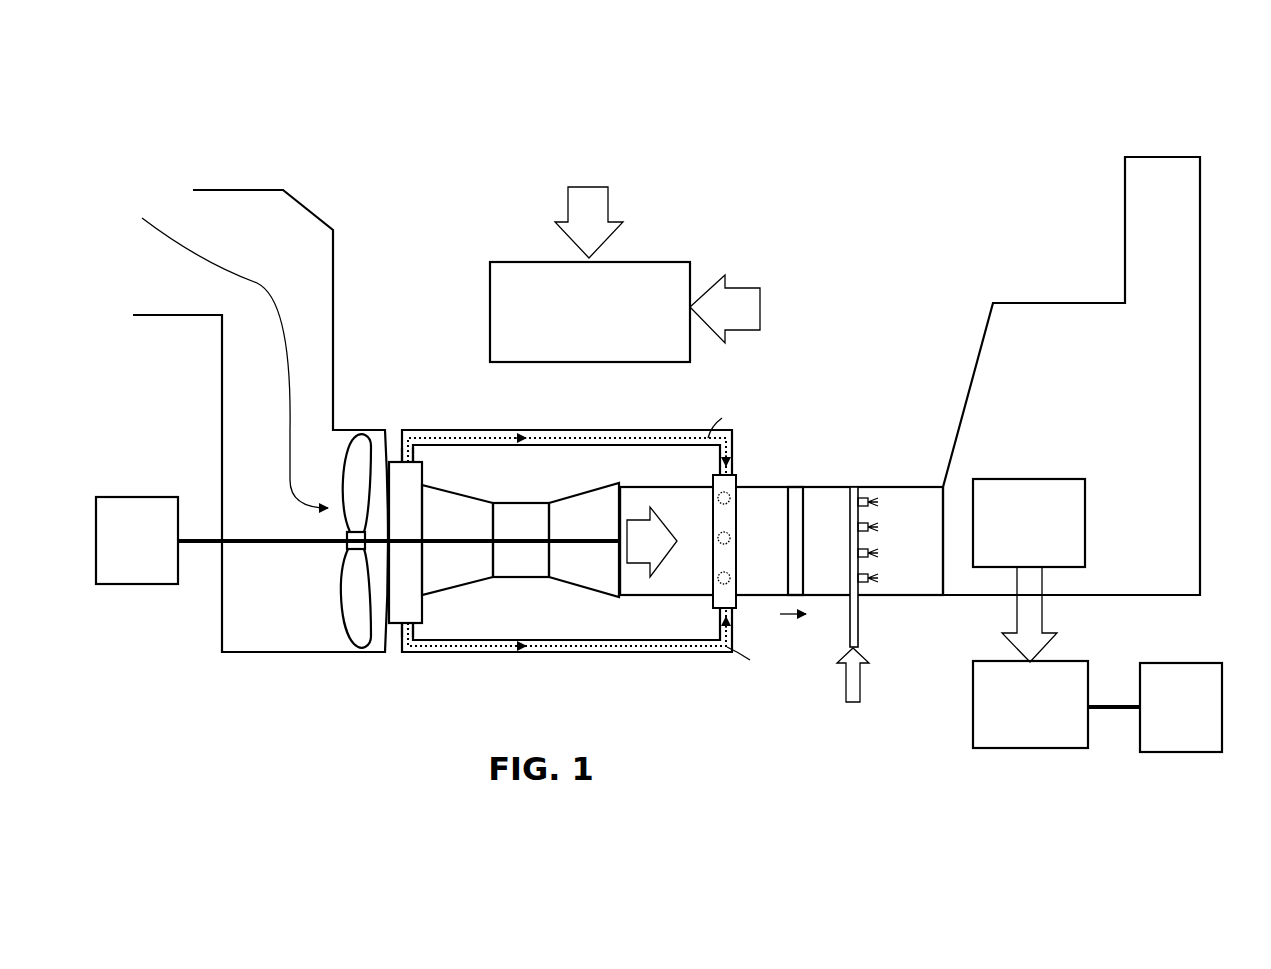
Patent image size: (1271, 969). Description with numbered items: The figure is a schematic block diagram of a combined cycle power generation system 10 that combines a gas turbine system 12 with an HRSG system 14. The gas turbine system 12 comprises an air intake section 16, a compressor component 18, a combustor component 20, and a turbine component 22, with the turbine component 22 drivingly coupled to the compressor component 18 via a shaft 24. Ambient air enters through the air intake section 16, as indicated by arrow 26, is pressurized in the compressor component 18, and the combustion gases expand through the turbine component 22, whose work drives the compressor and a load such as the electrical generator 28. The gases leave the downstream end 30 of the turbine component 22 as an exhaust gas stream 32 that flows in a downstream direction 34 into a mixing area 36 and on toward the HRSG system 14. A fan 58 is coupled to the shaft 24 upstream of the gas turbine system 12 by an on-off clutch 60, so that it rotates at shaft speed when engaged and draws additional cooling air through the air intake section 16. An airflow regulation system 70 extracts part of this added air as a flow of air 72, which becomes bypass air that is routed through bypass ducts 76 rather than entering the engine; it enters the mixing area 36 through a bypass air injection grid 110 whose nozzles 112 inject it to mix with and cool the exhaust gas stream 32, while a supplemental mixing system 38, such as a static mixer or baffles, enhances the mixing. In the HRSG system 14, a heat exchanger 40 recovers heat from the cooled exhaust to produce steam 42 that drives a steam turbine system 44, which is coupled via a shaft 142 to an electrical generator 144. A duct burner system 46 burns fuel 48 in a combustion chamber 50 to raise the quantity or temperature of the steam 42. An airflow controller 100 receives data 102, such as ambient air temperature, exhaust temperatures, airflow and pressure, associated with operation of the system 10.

The combined cycle power generation system 10 is at (385, 145).
The gas turbine system 12 is at (506, 592).
The HRSG system 14 is at (1071, 409).
The air intake section 16 is at (218, 376).
The compressor component 18 is at (457, 540).
The combustor component 20 is at (521, 540).
The turbine component 22 is at (584, 540).
The shaft 24 is at (270, 546).
The arrow indicating air entering 26 is at (258, 284).
The electrical generator 28 is at (138, 585).
The downstream end 30 is at (625, 598).
The exhaust gas stream 32 is at (652, 542).
The downstream direction 34 is at (779, 613).
The mixing area 36 is at (781, 561).
The supplemental mixing system 38 is at (796, 485).
The heat exchanger 40 is at (1029, 523).
The steam 42 is at (1046, 603).
The steam turbine system 44 is at (1030, 704).
The duct burner system 46 is at (888, 500).
The fuel 48 is at (864, 684).
The combustion chamber 50 is at (890, 571).
The fan 58 is at (345, 590).
The on-off clutch 60 is at (346, 546).
The airflow regulation system 70 is at (405, 542).
The flow of air 72 is at (419, 434).
The bypass ducts 76 is at (472, 428).
The airflow controller 100 is at (590, 312).
The data 102 is at (746, 288).
The bypass air injection grid 110 is at (737, 476).
The nozzles 112 is at (732, 539).
The shaft 142 is at (1125, 711).
The electrical generator 144 is at (1183, 754).